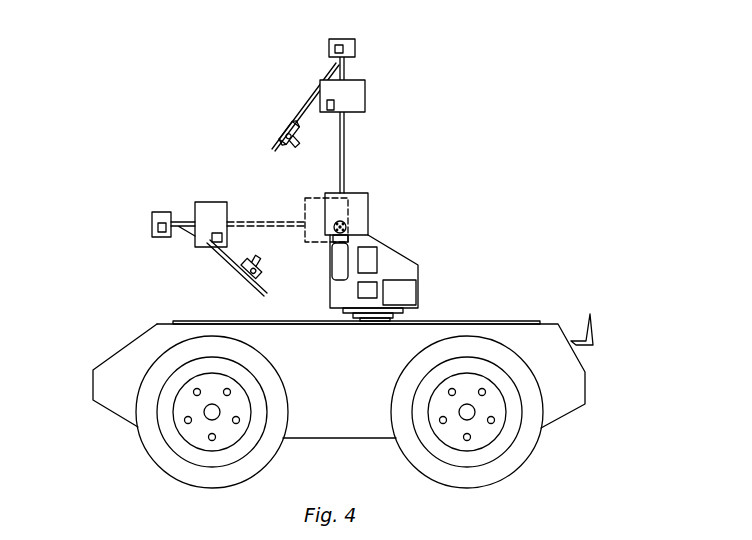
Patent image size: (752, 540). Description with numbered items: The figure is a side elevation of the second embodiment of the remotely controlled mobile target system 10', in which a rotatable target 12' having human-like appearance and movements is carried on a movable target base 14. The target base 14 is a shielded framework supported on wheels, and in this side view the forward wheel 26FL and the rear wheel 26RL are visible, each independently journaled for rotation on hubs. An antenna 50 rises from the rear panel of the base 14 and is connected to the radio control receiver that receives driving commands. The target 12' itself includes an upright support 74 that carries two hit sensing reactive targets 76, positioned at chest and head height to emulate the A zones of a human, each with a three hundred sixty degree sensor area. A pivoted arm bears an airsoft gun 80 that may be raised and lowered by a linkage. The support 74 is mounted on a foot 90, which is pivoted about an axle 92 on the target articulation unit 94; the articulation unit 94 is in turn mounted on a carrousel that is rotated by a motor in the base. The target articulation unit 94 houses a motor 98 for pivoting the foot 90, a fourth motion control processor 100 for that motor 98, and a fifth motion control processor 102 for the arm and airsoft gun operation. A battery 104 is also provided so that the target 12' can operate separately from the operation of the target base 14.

The mobile target system 10' is at (338, 272).
The rotatable target 12' is at (389, 125).
The movable target base 14 is at (126, 344).
The forward wheel 26FL is at (209, 488).
The rear wheel 26RL is at (500, 477).
The antenna 50 is at (595, 328).
The support 74 is at (341, 140).
The hit sensing reactive targets 76 is at (334, 103).
The airsoft gun 80 is at (279, 134).
The foot 90 is at (369, 213).
The axle 92 is at (329, 236).
The target articulation unit 94 is at (420, 263).
The motor 98 is at (333, 278).
The fourth motion control processor 100 is at (378, 256).
The fifth motion control processor 102 is at (368, 300).
The battery 104 is at (417, 295).